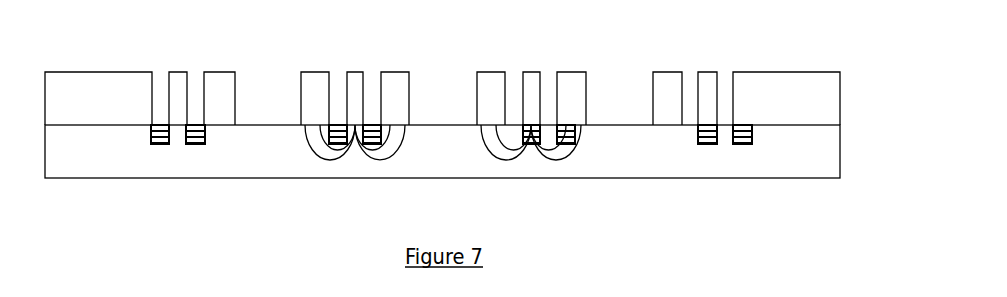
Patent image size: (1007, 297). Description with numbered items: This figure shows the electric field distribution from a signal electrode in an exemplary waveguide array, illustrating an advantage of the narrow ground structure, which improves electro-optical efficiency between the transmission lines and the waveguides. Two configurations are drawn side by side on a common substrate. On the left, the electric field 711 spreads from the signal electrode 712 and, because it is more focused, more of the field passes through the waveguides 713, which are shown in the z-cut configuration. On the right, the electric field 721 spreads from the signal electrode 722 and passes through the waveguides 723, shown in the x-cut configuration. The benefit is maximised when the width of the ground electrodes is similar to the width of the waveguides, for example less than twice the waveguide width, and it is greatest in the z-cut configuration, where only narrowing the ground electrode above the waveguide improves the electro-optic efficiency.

The electric field 711 is at (316, 155).
The signal electrode 712 is at (353, 67).
The waveguides 713 is at (370, 144).
The electric field 721 is at (490, 153).
The signal electrode 722 is at (530, 67).
The waveguides 723 is at (568, 144).